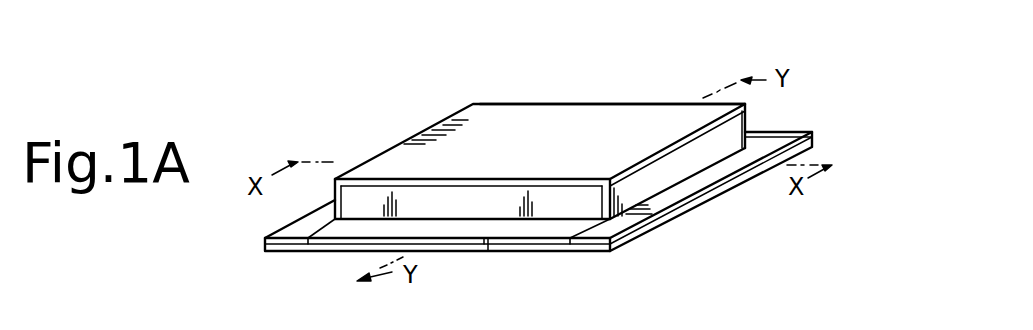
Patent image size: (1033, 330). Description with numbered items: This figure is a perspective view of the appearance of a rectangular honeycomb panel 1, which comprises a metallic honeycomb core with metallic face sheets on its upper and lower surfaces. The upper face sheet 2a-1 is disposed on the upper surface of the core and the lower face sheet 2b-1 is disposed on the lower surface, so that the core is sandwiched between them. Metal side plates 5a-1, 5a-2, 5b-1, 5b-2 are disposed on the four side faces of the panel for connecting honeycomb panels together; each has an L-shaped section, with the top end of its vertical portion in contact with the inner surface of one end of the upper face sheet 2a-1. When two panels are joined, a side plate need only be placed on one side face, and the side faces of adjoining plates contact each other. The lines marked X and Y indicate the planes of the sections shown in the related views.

The honeycomb panel 1 is at (306, 112).
The upper face sheet 2a-1 is at (503, 123).
The lower face sheet 2b-1 is at (730, 187).
The side plate 5a-1 is at (687, 167).
The side plate 5a-2 is at (432, 123).
The side plate 5b-1 is at (362, 207).
The side plate 5b-2 is at (598, 104).